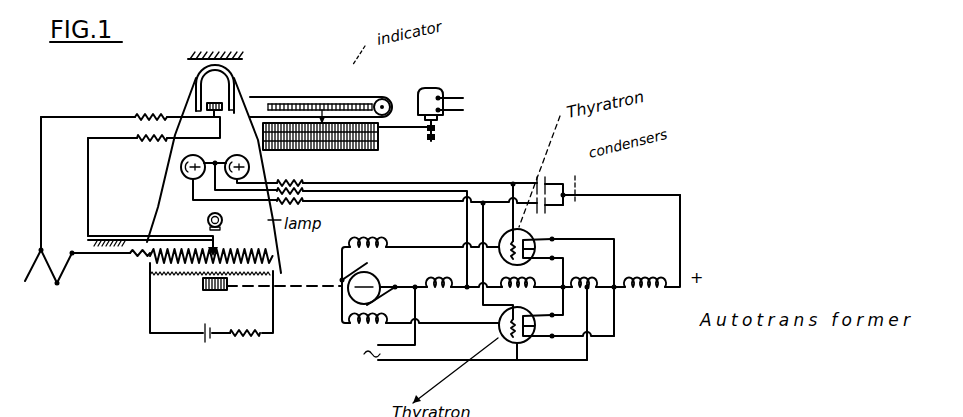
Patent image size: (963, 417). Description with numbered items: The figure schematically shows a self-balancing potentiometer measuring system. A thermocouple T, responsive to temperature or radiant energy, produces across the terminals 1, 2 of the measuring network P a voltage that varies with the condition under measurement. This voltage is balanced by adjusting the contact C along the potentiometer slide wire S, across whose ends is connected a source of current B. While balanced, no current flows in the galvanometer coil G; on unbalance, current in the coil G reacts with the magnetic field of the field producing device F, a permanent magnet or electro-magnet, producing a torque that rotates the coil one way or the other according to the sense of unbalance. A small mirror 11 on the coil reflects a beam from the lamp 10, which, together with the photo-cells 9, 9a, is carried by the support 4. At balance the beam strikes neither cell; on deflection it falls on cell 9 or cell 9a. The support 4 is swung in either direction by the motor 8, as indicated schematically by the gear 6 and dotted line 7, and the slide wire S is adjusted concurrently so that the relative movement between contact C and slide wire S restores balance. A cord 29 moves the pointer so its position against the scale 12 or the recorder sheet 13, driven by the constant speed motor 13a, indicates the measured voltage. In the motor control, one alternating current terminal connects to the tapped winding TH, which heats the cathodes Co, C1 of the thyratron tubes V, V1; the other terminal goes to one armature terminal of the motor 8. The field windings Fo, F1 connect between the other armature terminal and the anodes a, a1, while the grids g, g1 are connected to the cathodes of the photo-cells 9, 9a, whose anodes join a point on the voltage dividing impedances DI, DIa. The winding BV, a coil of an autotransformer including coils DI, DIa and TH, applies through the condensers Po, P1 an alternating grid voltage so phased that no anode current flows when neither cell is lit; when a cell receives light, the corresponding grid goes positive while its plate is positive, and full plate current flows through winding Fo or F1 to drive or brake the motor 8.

The terminal 1 is at (346, 84).
The terminal 2 is at (110, 267).
The thermocouple T is at (56, 277).
The support 4 is at (156, 205).
The measuring network P is at (70, 193).
The field producing device F is at (195, 70).
The coil G is at (216, 103).
The mirror 11 is at (218, 112).
The contact C is at (219, 250).
The potentiometer slide wire S is at (248, 256).
The source of current B is at (208, 341).
The gear 6 is at (221, 291).
The dotted line 7 is at (295, 289).
The motor 8 is at (380, 276).
The photo-cell 9 is at (184, 176).
The photo-cell 9a is at (249, 167).
The lamp 10 is at (222, 220).
The scale 12 is at (290, 103).
The cord 29 is at (366, 99).
The recorder sheet 13 is at (379, 143).
The constant speed motor 13a is at (443, 89).
The field winding Fo is at (368, 241).
The field winding F1 is at (360, 333).
The voltage dividing impedance DI is at (436, 292).
The voltage dividing impedance DIa is at (521, 291).
The tapped winding TH is at (573, 285).
The winding BV is at (643, 291).
The condenser Po is at (546, 179).
The condenser P1 is at (548, 208).
The tube V is at (533, 238).
The anode a is at (508, 238).
The grid g is at (505, 258).
The cathode Co is at (533, 260).
The tube V1 is at (508, 347).
The anode a1 is at (498, 328).
The grid g1 is at (517, 360).
The cathode C1 is at (531, 344).